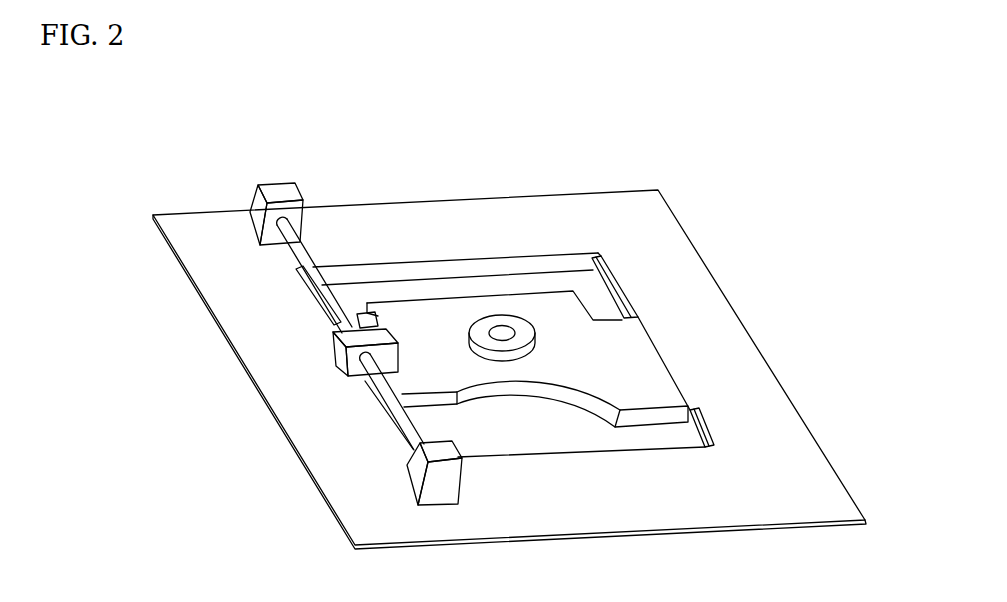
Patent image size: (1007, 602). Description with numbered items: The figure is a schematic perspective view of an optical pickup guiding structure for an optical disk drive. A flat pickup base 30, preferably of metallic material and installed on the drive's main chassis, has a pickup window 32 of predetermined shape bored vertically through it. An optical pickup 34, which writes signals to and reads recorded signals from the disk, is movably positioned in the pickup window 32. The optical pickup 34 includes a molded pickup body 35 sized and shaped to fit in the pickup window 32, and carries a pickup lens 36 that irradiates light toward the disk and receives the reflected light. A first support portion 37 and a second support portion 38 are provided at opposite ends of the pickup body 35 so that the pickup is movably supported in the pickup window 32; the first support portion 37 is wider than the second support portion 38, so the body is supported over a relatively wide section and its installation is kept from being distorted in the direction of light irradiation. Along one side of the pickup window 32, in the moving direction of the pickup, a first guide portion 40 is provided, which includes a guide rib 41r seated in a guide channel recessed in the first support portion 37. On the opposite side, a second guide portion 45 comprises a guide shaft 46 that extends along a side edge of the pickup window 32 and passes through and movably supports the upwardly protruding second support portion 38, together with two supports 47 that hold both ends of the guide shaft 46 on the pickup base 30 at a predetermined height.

The pickup base 30 is at (576, 212).
The pickup window 32 is at (409, 287).
The optical pickup 34 is at (530, 407).
The pickup body 35 is at (472, 307).
The pickup lens 36 is at (505, 330).
The first support portion 37 is at (663, 357).
The second support portion 38 is at (333, 345).
The first guide portion 40 is at (688, 440).
The guide rib 41r is at (694, 437).
The second guide portion 45 is at (371, 402).
The guide shaft 46 is at (403, 423).
The supports 47 is at (288, 190).